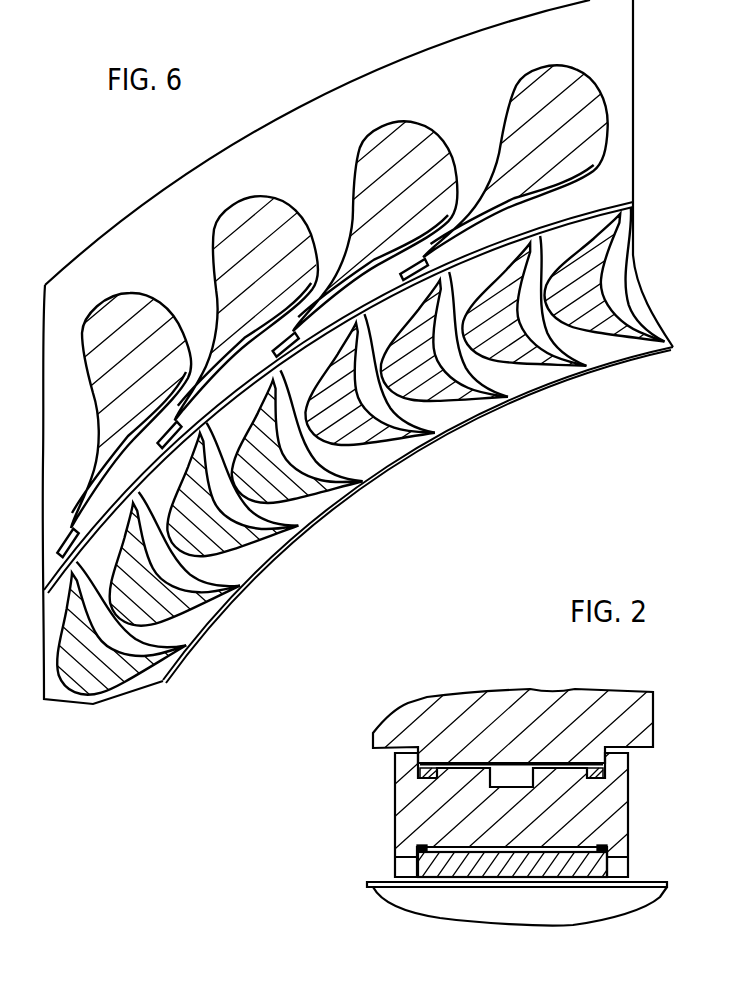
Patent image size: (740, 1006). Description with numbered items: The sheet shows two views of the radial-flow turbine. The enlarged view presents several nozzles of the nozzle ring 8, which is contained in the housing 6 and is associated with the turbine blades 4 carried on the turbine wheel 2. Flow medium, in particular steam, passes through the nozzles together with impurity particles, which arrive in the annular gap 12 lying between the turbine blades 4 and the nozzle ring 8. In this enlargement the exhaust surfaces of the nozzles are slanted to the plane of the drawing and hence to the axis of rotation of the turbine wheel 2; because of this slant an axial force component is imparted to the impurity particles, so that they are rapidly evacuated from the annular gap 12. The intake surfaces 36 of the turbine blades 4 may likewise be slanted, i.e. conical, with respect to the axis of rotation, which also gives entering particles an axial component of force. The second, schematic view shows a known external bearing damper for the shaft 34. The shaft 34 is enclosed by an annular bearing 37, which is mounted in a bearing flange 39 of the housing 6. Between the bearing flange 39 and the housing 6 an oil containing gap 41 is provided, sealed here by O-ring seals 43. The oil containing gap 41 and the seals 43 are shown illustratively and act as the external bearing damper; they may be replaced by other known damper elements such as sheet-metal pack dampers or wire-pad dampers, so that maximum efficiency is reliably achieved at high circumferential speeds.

In FIG. 6, the turbine wheel 2 is at (472, 417).
In FIG. 6, the turbine blades 4 is at (387, 440).
In FIG. 2, the housing 6 is at (560, 703).
In FIG. 6, the nozzle ring 8 is at (292, 230).
In FIG. 6, the annular gap 12 is at (223, 403).
In FIG. 6, the intake surfaces 36 is at (72, 535).
In FIG. 2, the shaft 34 is at (623, 902).
In FIG. 2, the annular bearing 37 is at (595, 867).
In FIG. 2, the bearing flange 39 is at (603, 820).
In FIG. 2, the oil containing gap 41 is at (457, 763).
In FIG. 2, the O-ring seals 43 is at (420, 772).